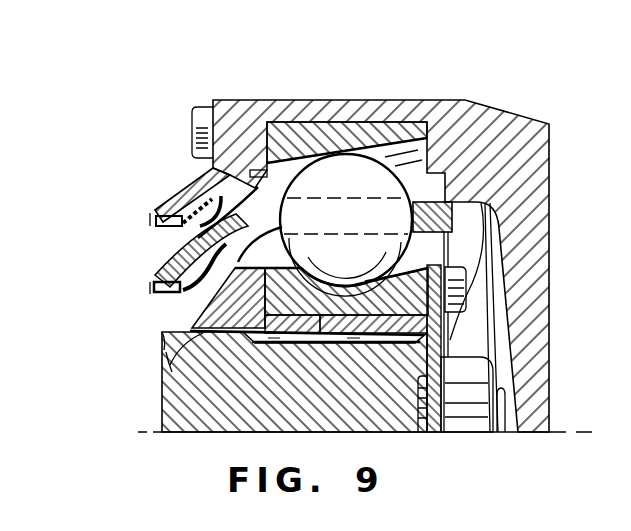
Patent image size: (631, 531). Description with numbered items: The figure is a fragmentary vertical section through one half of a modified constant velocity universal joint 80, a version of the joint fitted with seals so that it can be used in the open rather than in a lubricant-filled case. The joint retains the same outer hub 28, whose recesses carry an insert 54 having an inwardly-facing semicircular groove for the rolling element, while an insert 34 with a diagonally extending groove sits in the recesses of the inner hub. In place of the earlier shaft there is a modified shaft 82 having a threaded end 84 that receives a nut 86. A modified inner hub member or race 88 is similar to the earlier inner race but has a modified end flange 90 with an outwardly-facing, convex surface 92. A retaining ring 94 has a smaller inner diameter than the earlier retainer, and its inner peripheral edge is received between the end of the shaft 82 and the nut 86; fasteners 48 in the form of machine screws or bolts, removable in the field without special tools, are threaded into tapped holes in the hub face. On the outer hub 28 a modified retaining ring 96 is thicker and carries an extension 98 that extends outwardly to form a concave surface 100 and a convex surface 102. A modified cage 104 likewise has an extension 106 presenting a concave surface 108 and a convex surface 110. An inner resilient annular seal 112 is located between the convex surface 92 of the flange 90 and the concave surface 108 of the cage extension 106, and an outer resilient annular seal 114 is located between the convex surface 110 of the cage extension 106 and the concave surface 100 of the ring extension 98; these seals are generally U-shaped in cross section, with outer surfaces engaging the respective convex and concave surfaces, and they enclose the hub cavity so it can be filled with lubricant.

The modified universal joint 80 is at (328, 66).
The outer hub 28 is at (280, 85).
The insert 54 is at (345, 107).
The modified retaining ring 96 is at (212, 100).
The convex surface 92 is at (346, 225).
The insert 34 is at (318, 343).
The modified inner hub member or race 88 is at (188, 313).
The modified shaft 82 is at (170, 323).
The modified end flange 90 is at (182, 370).
The fasteners 48 is at (448, 317).
The retaining ring 94 is at (468, 306).
The nut 86 is at (493, 368).
The threaded end 84 is at (506, 427).
The extension 98 is at (144, 215).
The convex surface 102 is at (176, 193).
The concave surface 100 is at (187, 233).
The modified cage 104 is at (205, 198).
The outer resilient annular seal 114 is at (228, 197).
The extension 106 is at (148, 287).
The convex surface 110 is at (178, 251).
The inner resilient annular seal 112 is at (162, 259).
The concave surface 108 is at (185, 292).